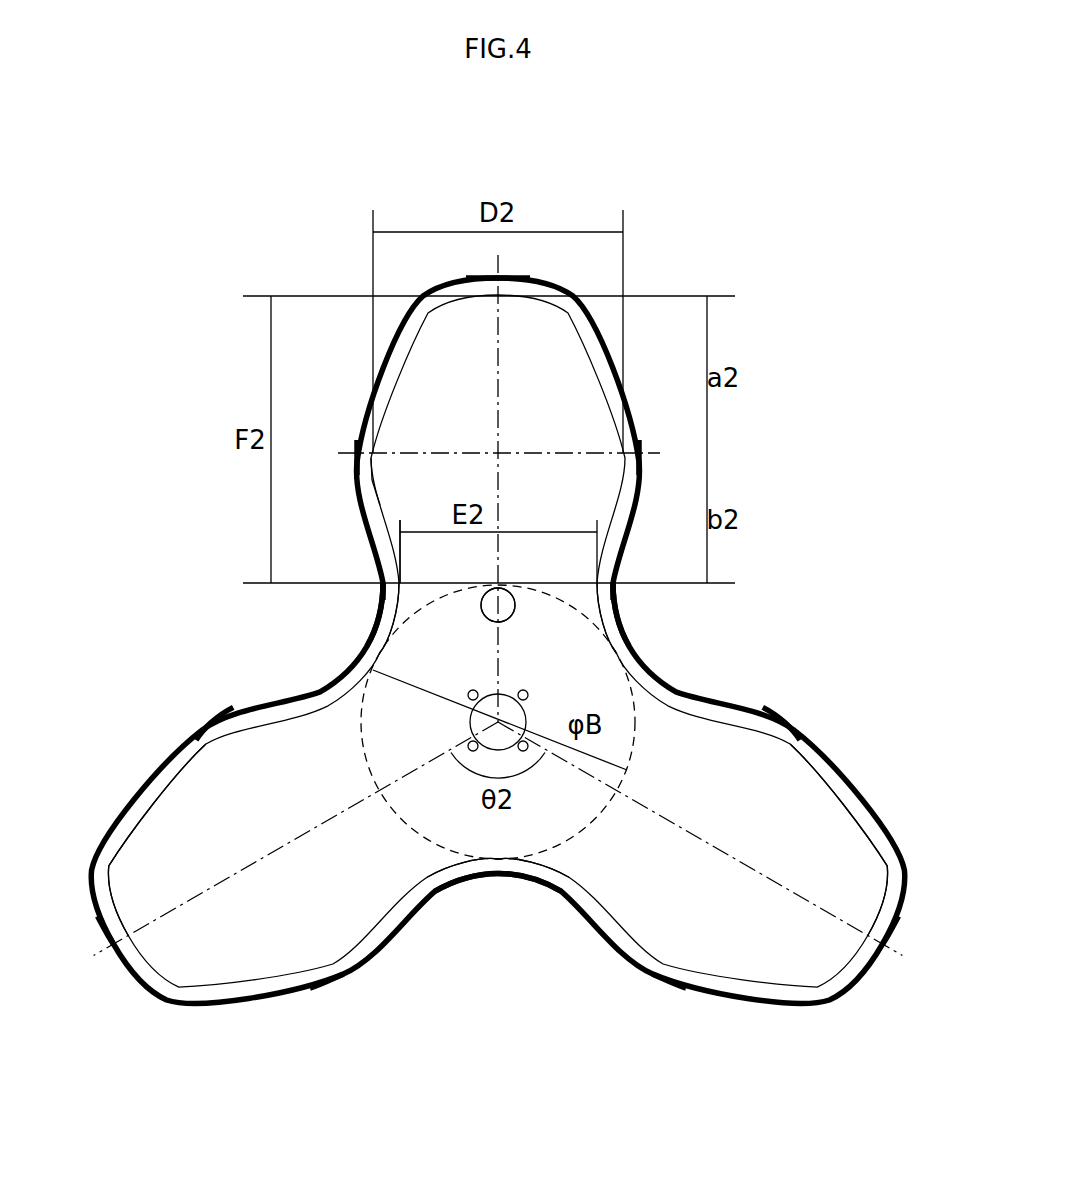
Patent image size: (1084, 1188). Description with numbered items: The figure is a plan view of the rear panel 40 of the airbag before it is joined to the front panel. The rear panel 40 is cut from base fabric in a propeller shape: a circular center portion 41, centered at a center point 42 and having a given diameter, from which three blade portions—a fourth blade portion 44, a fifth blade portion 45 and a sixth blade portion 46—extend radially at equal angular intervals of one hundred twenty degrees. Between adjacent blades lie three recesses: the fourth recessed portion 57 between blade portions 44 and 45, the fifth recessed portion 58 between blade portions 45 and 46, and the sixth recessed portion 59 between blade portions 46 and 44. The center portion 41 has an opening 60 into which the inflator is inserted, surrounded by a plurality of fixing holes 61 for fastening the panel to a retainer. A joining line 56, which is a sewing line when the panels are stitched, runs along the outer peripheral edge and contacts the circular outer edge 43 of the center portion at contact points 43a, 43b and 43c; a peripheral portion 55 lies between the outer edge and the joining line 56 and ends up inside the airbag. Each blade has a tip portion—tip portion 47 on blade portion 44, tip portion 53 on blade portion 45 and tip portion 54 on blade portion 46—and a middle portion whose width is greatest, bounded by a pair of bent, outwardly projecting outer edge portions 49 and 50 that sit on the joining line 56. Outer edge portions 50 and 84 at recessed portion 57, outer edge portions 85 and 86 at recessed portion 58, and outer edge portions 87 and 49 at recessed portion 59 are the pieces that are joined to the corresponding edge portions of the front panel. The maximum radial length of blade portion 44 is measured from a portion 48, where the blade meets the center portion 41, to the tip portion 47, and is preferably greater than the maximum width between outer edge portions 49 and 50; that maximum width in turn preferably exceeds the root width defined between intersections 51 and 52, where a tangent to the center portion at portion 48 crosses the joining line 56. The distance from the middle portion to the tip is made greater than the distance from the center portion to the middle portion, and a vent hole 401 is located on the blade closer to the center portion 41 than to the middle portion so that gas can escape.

The rear panel 40 is at (322, 262).
The center portion 41 is at (598, 707).
The center point 42 is at (507, 712).
The circular outer edge 43 is at (640, 737).
The contact point 43a is at (368, 647).
The contact point 43b is at (506, 878).
The contact point 43c is at (626, 636).
The fourth blade portion 44 is at (417, 493).
The fifth blade portion 45 is at (180, 812).
The sixth blade portion 46 is at (793, 808).
The tip portion 47 is at (508, 282).
The portion where blade contacts center portion 48 is at (499, 587).
The vent hole 401 is at (481, 605).
The outer edge portion 49 is at (627, 453).
The outer edge portion 50 is at (362, 452).
The intersection 51 is at (600, 582).
The intersection 52 is at (398, 583).
The tip portion 53 is at (118, 928).
The tip portion 54 is at (878, 928).
The peripheral portion 55 is at (376, 498).
The joining line 56 is at (373, 472).
The fourth recessed portion 57 is at (378, 632).
The fifth recessed portion 58 is at (488, 873).
The sixth recessed portion 59 is at (608, 660).
The opening 60 is at (522, 689).
The fixing hole 61 is at (472, 689).
The outer edge portion 84 is at (207, 740).
The outer edge portion 85 is at (352, 962).
The outer edge portion 86 is at (645, 962).
The outer edge portion 87 is at (790, 725).